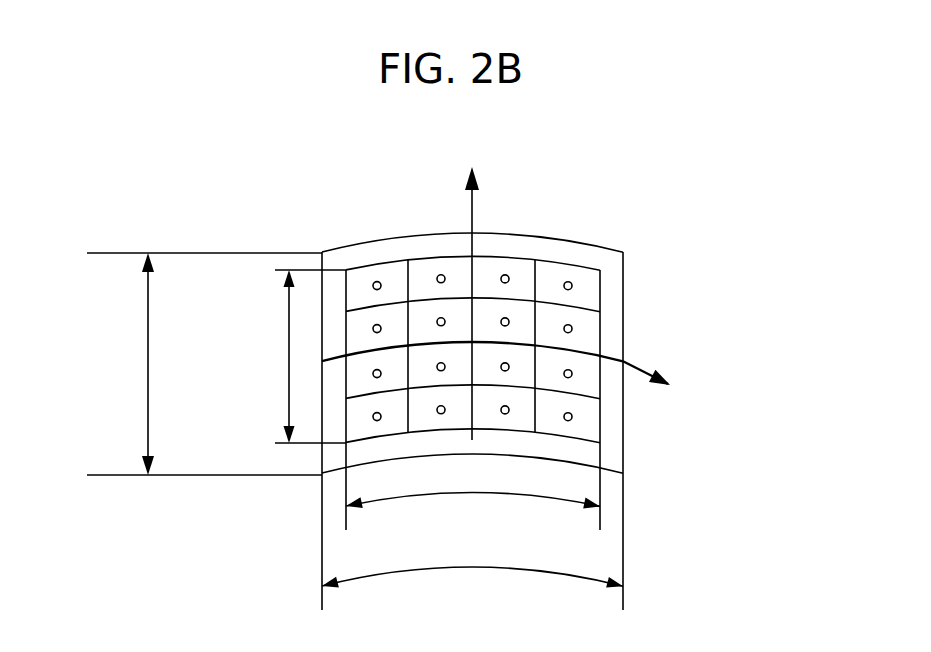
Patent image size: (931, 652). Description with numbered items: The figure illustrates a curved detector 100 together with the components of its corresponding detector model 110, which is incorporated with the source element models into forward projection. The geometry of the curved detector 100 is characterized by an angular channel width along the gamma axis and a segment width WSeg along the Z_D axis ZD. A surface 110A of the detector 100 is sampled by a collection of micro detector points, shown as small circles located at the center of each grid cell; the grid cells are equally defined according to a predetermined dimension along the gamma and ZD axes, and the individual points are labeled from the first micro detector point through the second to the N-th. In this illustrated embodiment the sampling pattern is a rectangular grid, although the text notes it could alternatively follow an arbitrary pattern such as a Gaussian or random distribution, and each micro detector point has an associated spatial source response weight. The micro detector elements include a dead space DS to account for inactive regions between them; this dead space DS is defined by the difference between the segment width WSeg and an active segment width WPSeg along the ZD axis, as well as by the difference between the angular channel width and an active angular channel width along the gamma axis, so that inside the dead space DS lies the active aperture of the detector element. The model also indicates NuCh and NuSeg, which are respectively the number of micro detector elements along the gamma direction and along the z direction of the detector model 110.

The detector model 110 is at (683, 152).
The detector 100 is at (613, 273).
The surface of the detector 110A is at (604, 385).
The Z_D axis ZD is at (474, 288).
The dead space DS is at (337, 460).
The segment width WSeg is at (202, 364).
The active segment width WPSeg is at (264, 356).
The number of micro detector elements along the z direction NuSeg is at (223, 379).
The number of micro detector elements along the γ direction NuCh is at (473, 497).